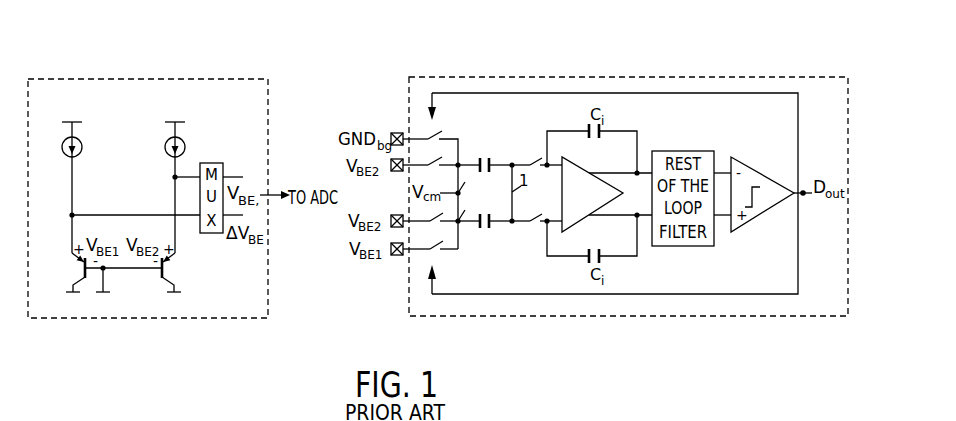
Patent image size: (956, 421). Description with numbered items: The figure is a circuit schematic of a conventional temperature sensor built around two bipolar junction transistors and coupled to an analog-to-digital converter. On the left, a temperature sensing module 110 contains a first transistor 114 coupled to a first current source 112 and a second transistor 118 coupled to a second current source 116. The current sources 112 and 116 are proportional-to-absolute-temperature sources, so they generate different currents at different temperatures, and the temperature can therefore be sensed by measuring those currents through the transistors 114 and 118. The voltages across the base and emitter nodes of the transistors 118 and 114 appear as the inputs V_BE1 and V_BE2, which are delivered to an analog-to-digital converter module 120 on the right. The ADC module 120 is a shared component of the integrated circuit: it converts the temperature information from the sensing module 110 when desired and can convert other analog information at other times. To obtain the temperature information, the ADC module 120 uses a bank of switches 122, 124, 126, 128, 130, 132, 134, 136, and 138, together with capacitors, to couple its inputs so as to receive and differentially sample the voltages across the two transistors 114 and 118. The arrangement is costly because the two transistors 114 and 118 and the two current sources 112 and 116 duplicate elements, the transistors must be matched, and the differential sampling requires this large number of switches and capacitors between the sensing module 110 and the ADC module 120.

The temperature sensing module 110 is at (144, 77).
The current source 112 is at (185, 137).
The transistor 114 is at (168, 266).
The current source 116 is at (82, 137).
The transistor 118 is at (80, 262).
The analog-to-digital converter module 120 is at (532, 77).
The switch 122 is at (438, 137).
The switch 124 is at (438, 163).
The switch 126 is at (440, 224).
The switch 128 is at (440, 251).
The switch 130 is at (465, 184).
The switch 132 is at (466, 211).
The switch 134 is at (533, 160).
The switch 136 is at (514, 191).
The switch 138 is at (530, 228).